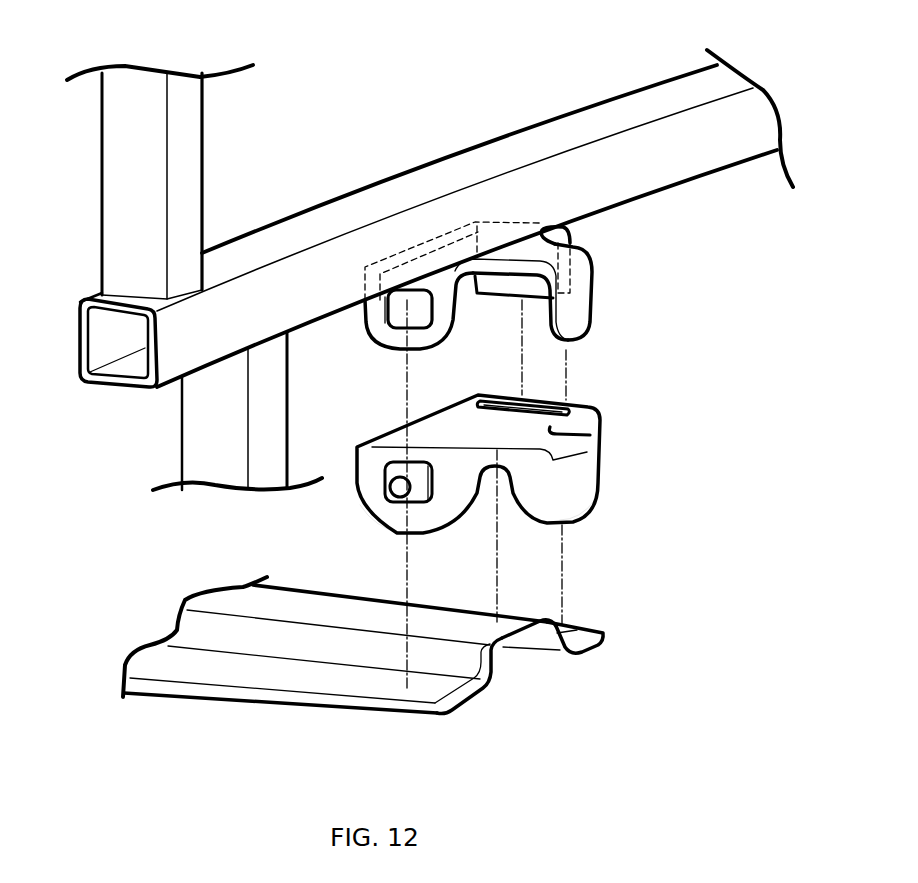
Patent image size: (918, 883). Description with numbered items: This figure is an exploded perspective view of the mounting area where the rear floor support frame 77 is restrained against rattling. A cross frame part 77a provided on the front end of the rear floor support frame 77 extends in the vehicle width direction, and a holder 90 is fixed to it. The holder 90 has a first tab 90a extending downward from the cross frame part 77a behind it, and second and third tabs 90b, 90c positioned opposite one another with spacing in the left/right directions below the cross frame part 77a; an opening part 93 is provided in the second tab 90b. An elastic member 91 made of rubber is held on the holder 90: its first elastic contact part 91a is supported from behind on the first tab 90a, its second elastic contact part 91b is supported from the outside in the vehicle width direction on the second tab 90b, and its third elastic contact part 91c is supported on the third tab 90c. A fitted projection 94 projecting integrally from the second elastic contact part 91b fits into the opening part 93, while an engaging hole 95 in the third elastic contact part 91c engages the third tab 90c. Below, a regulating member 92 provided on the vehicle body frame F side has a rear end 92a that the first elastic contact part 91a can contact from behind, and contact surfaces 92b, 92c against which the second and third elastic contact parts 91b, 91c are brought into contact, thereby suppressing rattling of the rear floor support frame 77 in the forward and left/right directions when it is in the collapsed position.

The rear floor support frame 77 is at (123, 207).
The cross frame part 77a is at (528, 137).
The holder 90 is at (493, 278).
The first tab 90a is at (578, 313).
The second tab 90b is at (390, 347).
The third tab 90c is at (568, 236).
The opening part 93 is at (383, 317).
The elastic member 91 is at (504, 470).
The first elastic contact part 91a is at (573, 505).
The second elastic contact part 91b is at (430, 517).
The third elastic contact part 91c is at (600, 430).
The fitted projection 94 is at (407, 502).
The engaging hole 95 is at (537, 403).
The regulating member 92 is at (408, 680).
The rear end 92a is at (523, 635).
The contact surface 92b is at (445, 657).
The contact surface 92c is at (580, 624).
The vehicle body frame F is at (310, 715).